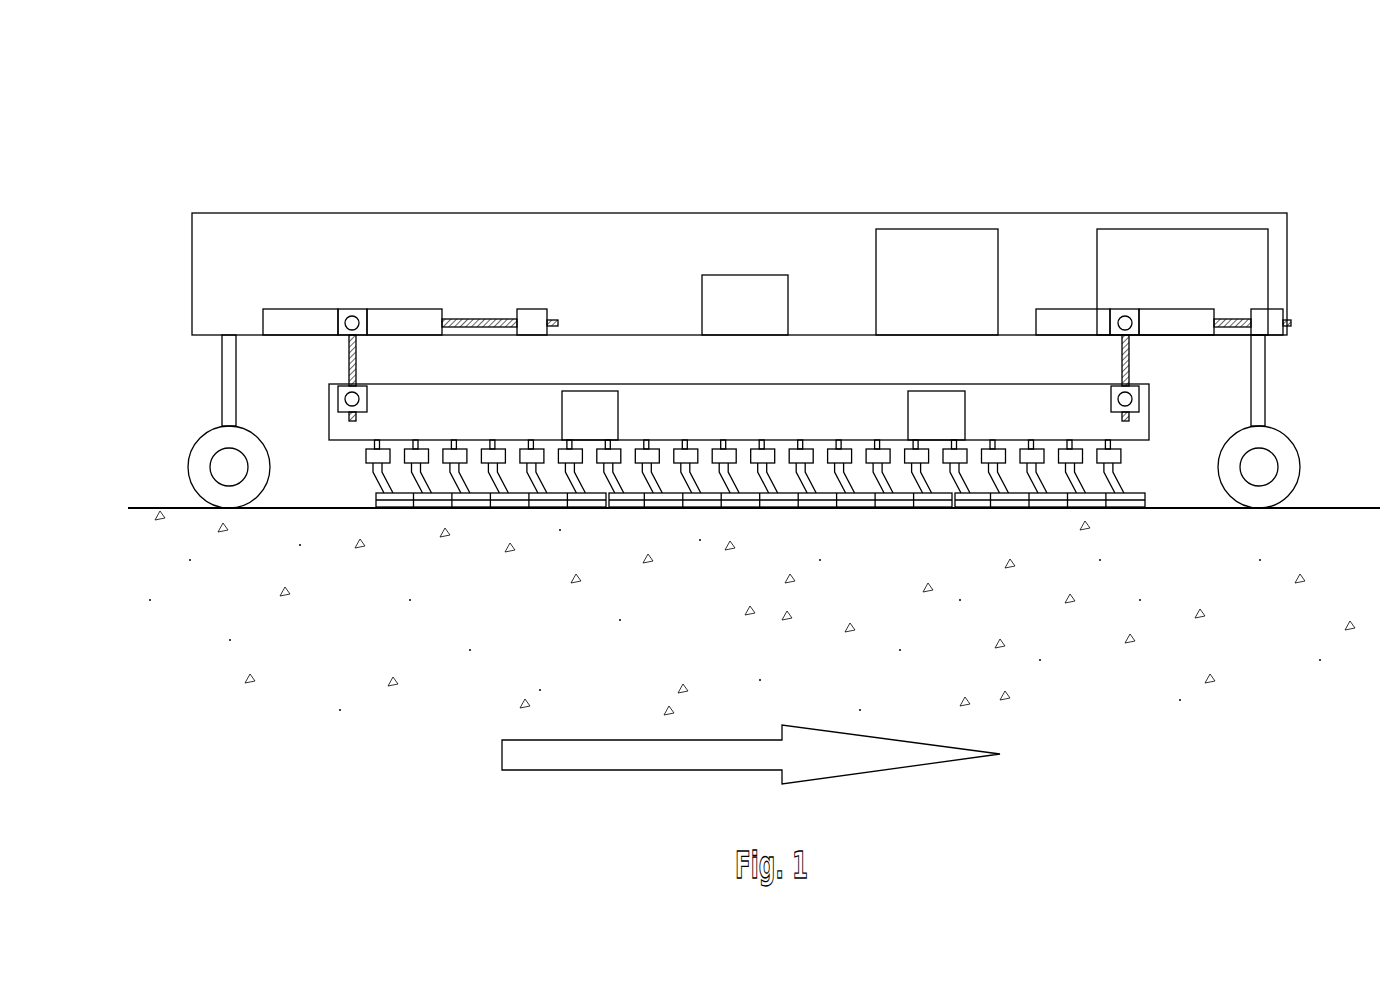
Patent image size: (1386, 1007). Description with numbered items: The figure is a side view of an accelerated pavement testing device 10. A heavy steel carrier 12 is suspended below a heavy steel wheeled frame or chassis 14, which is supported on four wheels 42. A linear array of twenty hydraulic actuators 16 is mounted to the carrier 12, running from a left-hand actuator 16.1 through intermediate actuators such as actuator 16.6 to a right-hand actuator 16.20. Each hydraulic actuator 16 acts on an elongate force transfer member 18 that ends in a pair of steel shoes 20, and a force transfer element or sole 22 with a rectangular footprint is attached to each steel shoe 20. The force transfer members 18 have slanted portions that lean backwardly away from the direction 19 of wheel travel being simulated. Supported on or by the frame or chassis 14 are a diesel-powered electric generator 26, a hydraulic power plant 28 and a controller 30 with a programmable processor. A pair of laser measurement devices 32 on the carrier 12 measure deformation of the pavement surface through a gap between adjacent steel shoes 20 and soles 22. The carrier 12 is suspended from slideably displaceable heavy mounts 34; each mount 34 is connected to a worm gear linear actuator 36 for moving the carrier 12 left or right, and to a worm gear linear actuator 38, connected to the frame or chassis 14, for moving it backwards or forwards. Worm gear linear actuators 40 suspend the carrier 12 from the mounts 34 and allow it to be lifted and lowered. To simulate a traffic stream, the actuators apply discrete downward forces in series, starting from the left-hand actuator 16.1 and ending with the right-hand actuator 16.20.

The accelerated pavement testing device 10 is at (182, 156).
The carrier 12 is at (352, 432).
The frame or chassis 14 is at (205, 255).
The hydraulic actuator 16 is at (745, 425).
The left-hand actuator 16.1 is at (378, 440).
The hydraulic actuator 16.6 is at (566, 455).
The right-hand actuator 16.20 is at (1110, 455).
The force transfer member 18 is at (788, 517).
The direction of wheel travel 19 is at (595, 740).
The steel shoe 20 is at (1055, 497).
The sole 22 is at (963, 497).
The diesel-powered electric generator 26 is at (1165, 240).
The hydraulic power plant 28 is at (903, 243).
The controller 30 is at (718, 302).
The laser measurement device 32 is at (597, 403).
The mount 34 is at (291, 320).
The worm gear linear actuator 36 is at (344, 318).
The worm gear linear actuator 38 is at (537, 322).
The worm gear linear actuator 40 is at (340, 396).
The wheel 42 is at (208, 447).